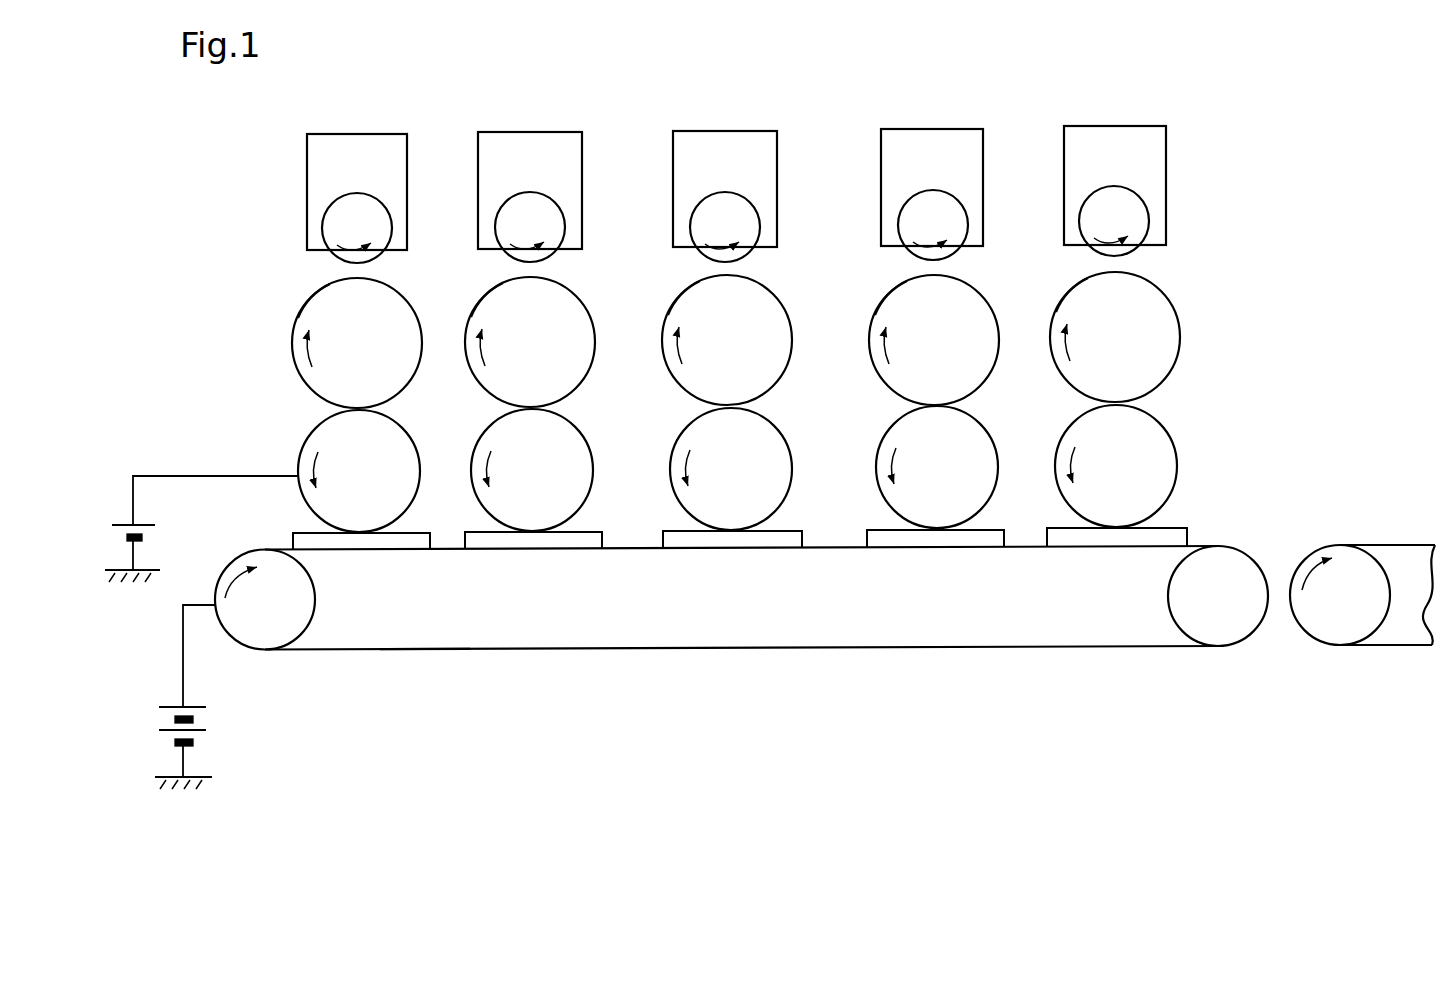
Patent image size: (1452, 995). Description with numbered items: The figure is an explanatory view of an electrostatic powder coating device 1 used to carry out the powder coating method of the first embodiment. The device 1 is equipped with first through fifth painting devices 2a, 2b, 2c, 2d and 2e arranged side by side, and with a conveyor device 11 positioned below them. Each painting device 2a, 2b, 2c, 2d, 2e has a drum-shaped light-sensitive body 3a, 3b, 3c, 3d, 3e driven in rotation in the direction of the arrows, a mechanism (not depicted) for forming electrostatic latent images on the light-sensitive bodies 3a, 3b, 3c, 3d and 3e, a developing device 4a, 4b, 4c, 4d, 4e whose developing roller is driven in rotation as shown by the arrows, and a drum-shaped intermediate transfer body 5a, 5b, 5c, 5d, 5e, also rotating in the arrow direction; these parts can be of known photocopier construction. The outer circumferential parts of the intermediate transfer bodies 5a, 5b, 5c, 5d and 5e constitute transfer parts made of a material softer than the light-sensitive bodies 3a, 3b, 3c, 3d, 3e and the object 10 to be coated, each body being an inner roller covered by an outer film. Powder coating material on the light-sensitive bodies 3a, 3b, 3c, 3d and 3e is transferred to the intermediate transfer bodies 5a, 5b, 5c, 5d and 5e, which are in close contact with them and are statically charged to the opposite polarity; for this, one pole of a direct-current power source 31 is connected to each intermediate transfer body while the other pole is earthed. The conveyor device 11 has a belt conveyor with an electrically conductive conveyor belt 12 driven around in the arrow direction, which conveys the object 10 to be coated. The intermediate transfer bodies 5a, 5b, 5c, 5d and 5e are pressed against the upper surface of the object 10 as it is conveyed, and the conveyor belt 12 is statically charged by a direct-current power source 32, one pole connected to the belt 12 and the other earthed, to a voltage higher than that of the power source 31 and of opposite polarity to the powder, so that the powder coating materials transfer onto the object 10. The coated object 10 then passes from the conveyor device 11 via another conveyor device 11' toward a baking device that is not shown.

The electrostatic powder coating device 1 is at (1172, 170).
The first painting device 2a is at (308, 297).
The second painting device 2b is at (487, 282).
The third painting device 2c is at (678, 282).
The fourth painting device 2d is at (878, 295).
The fifth painting device 2e is at (1066, 288).
The light-sensitive body 3a is at (318, 318).
The light-sensitive body 3b is at (490, 314).
The light-sensitive body 3c is at (687, 315).
The light-sensitive body 3d is at (888, 314).
The light-sensitive body 3e is at (1075, 312).
The developing device 4a is at (323, 177).
The developing device 4b is at (500, 177).
The developing device 4c is at (688, 177).
The developing device 4d is at (897, 176).
The developing device 4e is at (1090, 174).
The intermediate transfer body 5a is at (327, 440).
The intermediate transfer body 5b is at (503, 440).
The intermediate transfer body 5c is at (703, 432).
The intermediate transfer body 5d is at (907, 433).
The intermediate transfer body 5e is at (1093, 428).
The object to be coated 10 is at (293, 535).
The conveyor device 11 is at (741, 649).
The another conveyor device 11' is at (1362, 645).
The conveyor belt 12 is at (420, 653).
The direct-current power source 31 is at (153, 525).
The direct-current power source 32 is at (200, 730).